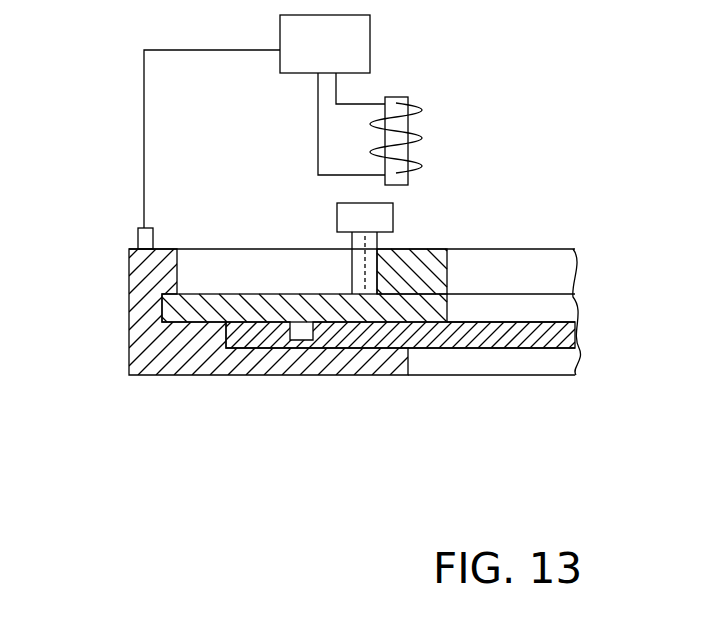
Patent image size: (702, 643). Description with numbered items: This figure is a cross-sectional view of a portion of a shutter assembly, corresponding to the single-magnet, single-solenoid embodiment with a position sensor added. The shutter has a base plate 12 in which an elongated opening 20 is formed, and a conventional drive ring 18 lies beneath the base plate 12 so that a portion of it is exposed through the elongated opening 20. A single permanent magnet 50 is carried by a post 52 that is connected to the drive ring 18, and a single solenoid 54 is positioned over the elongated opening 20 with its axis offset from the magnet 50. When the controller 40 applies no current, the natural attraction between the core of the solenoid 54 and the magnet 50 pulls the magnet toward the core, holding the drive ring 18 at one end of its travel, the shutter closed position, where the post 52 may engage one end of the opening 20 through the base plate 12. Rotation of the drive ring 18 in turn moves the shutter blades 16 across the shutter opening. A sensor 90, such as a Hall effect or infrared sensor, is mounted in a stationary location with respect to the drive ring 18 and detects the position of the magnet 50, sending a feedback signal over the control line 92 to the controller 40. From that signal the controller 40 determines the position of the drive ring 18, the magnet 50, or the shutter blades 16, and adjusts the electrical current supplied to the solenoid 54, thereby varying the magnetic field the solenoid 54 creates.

The base plate 12 is at (132, 305).
The shutter blades 16 is at (514, 350).
The drive ring 18 is at (527, 292).
The elongated opening 20 is at (197, 262).
The controller 40 is at (337, 54).
The permanent magnet 50 is at (395, 213).
The post 52 is at (350, 266).
The solenoid 54 is at (398, 97).
The sensor 90 is at (137, 235).
The control line 92 is at (144, 93).